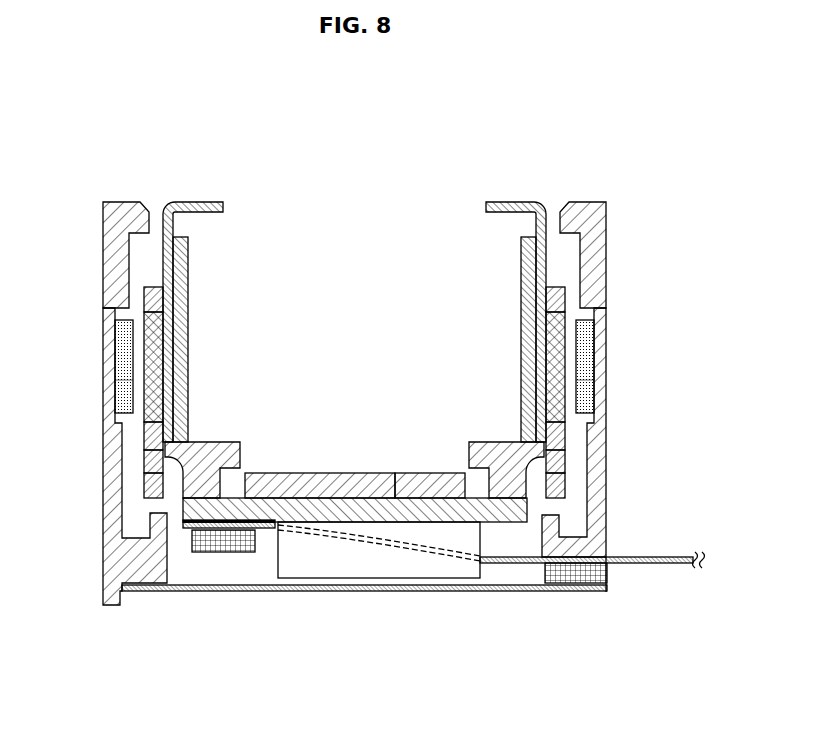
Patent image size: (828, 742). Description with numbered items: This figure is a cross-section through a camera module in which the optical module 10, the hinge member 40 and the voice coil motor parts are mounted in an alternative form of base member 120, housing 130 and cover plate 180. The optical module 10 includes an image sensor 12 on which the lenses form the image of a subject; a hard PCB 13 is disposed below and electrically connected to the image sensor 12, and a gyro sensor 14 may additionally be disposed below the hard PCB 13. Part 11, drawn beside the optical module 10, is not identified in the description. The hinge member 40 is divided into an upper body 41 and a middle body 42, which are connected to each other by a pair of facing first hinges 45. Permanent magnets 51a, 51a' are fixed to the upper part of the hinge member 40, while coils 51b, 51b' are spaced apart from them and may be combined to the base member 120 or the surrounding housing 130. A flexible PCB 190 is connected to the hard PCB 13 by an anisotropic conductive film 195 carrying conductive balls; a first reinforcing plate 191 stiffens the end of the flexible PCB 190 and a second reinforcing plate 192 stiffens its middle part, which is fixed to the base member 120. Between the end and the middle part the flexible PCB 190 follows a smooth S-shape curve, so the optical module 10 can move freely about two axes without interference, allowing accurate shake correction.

The optical module 10 is at (362, 449).
The panel side support 11 is at (523, 417).
The image sensor 12 is at (355, 473).
The hard PCB 13 is at (395, 497).
The gyro sensor 14 is at (433, 533).
The hinge member 40 is at (217, 350).
The upper body 41 is at (160, 300).
The middle body 42 is at (160, 484).
The first hinges 45 is at (190, 441).
The permanent magnet 51a is at (106, 367).
The coil 51b is at (91, 366).
The permanent magnet 51a' is at (605, 367).
The coil 51b' is at (620, 366).
The base member 120 is at (112, 457).
The housing 130 is at (113, 235).
The cover plate 180 is at (460, 592).
The flexible PCB 190 is at (263, 530).
The first reinforcing plate 191 is at (224, 552).
The second reinforcing plate 192 is at (573, 583).
The anisotropic conductive film 195 is at (183, 528).